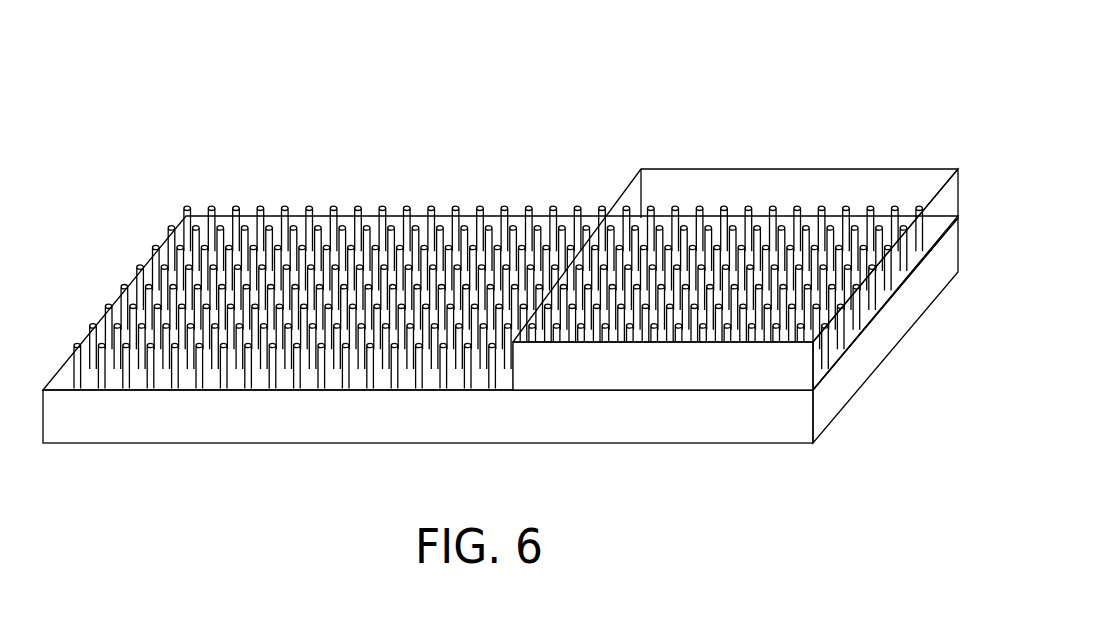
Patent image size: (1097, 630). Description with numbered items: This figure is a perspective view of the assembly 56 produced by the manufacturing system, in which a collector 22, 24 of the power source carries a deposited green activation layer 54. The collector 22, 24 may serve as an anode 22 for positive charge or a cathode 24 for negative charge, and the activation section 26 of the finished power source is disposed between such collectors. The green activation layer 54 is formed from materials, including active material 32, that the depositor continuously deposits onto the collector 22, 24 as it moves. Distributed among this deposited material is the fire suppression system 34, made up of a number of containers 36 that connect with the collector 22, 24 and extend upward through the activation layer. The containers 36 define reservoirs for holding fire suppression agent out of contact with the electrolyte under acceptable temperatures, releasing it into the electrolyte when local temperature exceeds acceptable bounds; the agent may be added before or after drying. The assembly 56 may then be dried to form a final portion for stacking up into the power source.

The anode collector 22 is at (500, 363).
The cathode collector 24 is at (572, 425).
The activation section 26 is at (852, 322).
The active material 32 is at (765, 182).
The fire suppression system 34 is at (575, 186).
The containers 36 is at (452, 210).
The green activation layer 54 is at (699, 156).
The assembly 56 is at (500, 260).